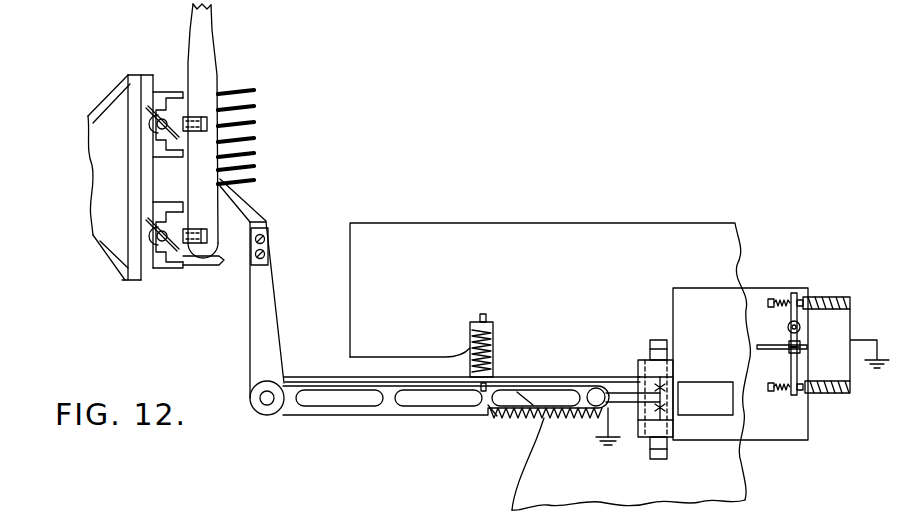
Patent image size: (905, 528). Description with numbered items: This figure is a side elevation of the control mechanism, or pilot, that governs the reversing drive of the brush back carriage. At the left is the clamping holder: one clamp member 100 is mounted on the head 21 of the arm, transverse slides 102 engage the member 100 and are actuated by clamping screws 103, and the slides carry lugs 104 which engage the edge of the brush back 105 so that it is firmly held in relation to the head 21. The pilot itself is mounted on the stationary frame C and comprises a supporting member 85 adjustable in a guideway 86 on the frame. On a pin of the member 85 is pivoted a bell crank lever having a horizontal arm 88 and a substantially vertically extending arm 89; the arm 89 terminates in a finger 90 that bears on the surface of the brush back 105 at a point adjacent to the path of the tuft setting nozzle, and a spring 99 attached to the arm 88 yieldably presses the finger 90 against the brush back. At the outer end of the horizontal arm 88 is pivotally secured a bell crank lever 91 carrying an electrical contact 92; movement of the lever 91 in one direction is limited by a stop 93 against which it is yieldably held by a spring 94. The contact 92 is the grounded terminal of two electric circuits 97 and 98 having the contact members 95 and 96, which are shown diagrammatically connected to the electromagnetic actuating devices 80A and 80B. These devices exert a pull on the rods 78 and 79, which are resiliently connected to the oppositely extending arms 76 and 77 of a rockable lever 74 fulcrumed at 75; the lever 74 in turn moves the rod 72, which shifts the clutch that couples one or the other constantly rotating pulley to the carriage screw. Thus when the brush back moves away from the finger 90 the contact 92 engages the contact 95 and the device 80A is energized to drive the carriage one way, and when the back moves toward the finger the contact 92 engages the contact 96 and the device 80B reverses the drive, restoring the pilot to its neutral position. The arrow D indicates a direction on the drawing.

The head 21 is at (132, 242).
The rod 72 is at (765, 345).
The rockable lever 74 is at (801, 346).
The fulcrum 75 is at (801, 327).
The arm 76 is at (792, 297).
The arm 77 is at (798, 376).
The rod 78 is at (820, 297).
The rod 79 is at (810, 392).
The electromagnetic actuating device 80A is at (838, 298).
The electromagnetic actuating device 80B is at (842, 394).
The supporting member 85 is at (600, 377).
The guideway 86 is at (717, 404).
The horizontal arm 88 is at (394, 382).
The vertically extending arm 89 is at (268, 327).
The finger 90 is at (247, 212).
The bell crank lever 91 is at (623, 393).
The electrical contact 92 is at (662, 391).
The stop 93 is at (614, 408).
The spring 94 is at (548, 422).
The contact member 95 is at (662, 386).
The contact member 96 is at (656, 412).
The electric circuit 97 is at (710, 287).
The electric circuit 98 is at (758, 441).
The spring 99 is at (493, 352).
The clamp member 100 is at (157, 78).
The transverse slides 102 is at (180, 112).
The clamping screws 103 is at (158, 243).
The lugs 104 is at (203, 121).
The brush back 105 is at (198, 171).
The stationary frame C is at (542, 456).
The direction D is at (113, 289).